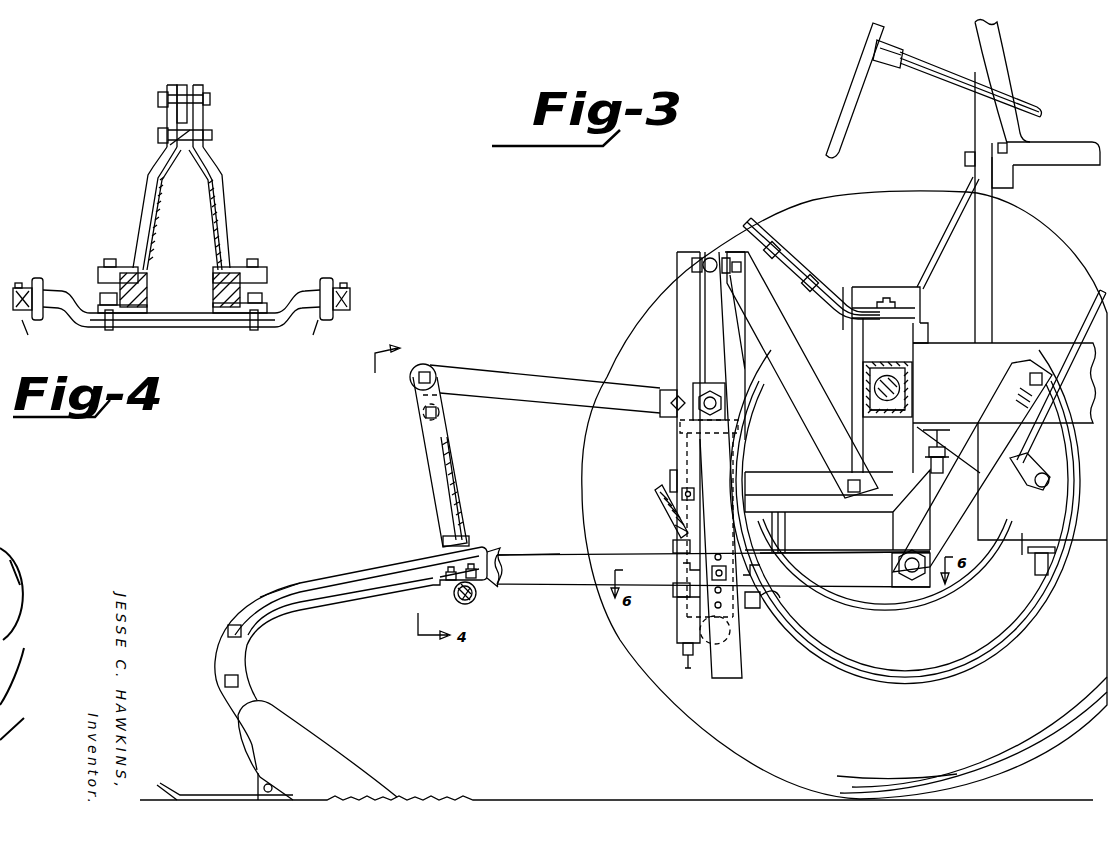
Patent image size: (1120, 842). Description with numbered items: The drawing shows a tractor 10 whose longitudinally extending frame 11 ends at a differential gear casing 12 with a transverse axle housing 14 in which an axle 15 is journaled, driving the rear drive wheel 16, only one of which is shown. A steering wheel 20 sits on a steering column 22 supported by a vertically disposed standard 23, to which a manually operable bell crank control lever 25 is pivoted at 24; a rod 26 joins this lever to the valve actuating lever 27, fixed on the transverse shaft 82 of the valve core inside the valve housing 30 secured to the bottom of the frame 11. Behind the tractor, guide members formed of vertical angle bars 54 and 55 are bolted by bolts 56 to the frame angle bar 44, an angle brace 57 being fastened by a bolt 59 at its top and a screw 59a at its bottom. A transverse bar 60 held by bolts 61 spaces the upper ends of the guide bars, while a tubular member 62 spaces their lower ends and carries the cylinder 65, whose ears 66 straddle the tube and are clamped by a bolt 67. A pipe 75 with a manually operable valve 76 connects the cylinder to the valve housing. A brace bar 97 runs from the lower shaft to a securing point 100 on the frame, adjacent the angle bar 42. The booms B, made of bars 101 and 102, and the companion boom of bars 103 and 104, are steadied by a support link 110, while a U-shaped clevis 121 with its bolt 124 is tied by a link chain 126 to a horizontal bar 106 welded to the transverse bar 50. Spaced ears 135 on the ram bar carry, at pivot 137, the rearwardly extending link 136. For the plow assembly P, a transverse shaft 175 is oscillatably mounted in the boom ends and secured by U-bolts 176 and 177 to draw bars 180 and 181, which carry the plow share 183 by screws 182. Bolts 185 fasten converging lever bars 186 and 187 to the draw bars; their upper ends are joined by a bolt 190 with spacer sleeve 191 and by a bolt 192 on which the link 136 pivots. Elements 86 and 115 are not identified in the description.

In FIG. 3, the tractor 10 is at (1047, 343).
In FIG. 3, the longitudinally extending frame 11 is at (955, 352).
In FIG. 3, the differential gear casing 12 is at (722, 553).
In FIG. 3, the transverse axle housing 14 is at (913, 404).
In FIG. 3, the axle 15 is at (910, 386).
In FIG. 3, the rear drive wheel 16 is at (1027, 760).
In FIG. 3, the steering wheel 20 is at (870, 68).
In FIG. 3, the steering column 22 is at (1025, 108).
In FIG. 3, the vertically disposed standard 23 is at (992, 256).
In FIG. 3, the pivot 24 is at (1010, 148).
In FIG. 3, the bell crank control lever 25 is at (1000, 42).
In FIG. 3, the rod 26 is at (1042, 432).
In FIG. 3, the valve actuating lever 27 is at (1050, 480).
In FIG. 3, the valve housing 30 is at (1022, 545).
In FIG. 3, the angle bar 42 is at (893, 527).
In FIG. 3, the angle bar 44 is at (862, 580).
In FIG. 3, the transverse bar 50 is at (668, 478).
In FIG. 3, the vertically disposed angle bar 54 is at (677, 323).
In FIG. 3, the vertically disposed angle bar 55 is at (743, 340).
In FIG. 3, the bolt 56 is at (694, 492).
In FIG. 3, the angle brace 57 is at (790, 325).
In FIG. 3, the bolt 59 is at (745, 268).
In FIG. 3, the screw 59a is at (860, 480).
In FIG. 3, the transverse bar 60 is at (712, 258).
In FIG. 3, the bolt 61 is at (692, 265).
In FIG. 3, the tubular member 62 is at (735, 630).
In FIG. 3, the cylinder 65 is at (752, 497).
In FIG. 3, the ear 66 is at (686, 667).
In FIG. 3, the bolt 67 is at (683, 655).
In FIG. 3, the pipe 75 is at (786, 527).
In FIG. 3, the manually operable valve 76 is at (950, 425).
In FIG. 3, the transverse shaft 82 is at (1046, 475).
In FIG. 3, the bolt 86 is at (1035, 580).
In FIG. 3, the brace bar 97 is at (1000, 397).
In FIG. 3, the securing point 100 is at (1030, 375).
In FIG. 3, the bar 101 is at (540, 587).
In FIG. 4, the bar 101 is at (342, 285).
In FIG. 4, the bar 102 is at (322, 278).
In FIG. 3, the bar 103 is at (498, 553).
In FIG. 4, the bar 103 is at (45, 287).
In FIG. 4, the bar 104 is at (35, 278).
In FIG. 3, the horizontally disposed bar 106 is at (657, 492).
In FIG. 3, the support bar or link 110 is at (725, 678).
In FIG. 3, the nut 115 is at (725, 402).
In FIG. 3, the U-shaped clevis 121 is at (683, 568).
In FIG. 3, the bolt 124 is at (672, 592).
In FIG. 3, the link chain 126 is at (662, 520).
In FIG. 3, the spaced ears 135 is at (662, 390).
In FIG. 3, the rearwardly extending link 136 is at (505, 373).
In FIG. 4, the rearwardly extending link 136 is at (180, 84).
In FIG. 3, the pivot 137 is at (671, 403).
In FIG. 3, the transverse shaft 175 is at (455, 597).
In FIG. 4, the transverse shaft 175 is at (185, 329).
In FIG. 3, the U-bolt 176 is at (476, 598).
In FIG. 4, the U-bolt 176 is at (254, 330).
In FIG. 4, the U-bolt 177 is at (110, 330).
In FIG. 3, the draw bar 180 is at (390, 562).
In FIG. 4, the draw bar 180 is at (213, 295).
In FIG. 4, the draw bar 181 is at (147, 295).
In FIG. 3, the screw 182 is at (238, 680).
In FIG. 3, the plow share 183 is at (305, 752).
In FIG. 3, the bolt 185 is at (466, 540).
In FIG. 4, the bolt 185 is at (258, 258).
In FIG. 3, the converging lever bar 186 is at (462, 467).
In FIG. 4, the converging lever bar 186 is at (223, 185).
In FIG. 4, the converging lever bar 187 is at (148, 185).
In FIG. 3, the bolt 190 is at (437, 412).
In FIG. 4, the bolt 190 is at (212, 136).
In FIG. 3, the spacer sleeve 191 is at (426, 418).
In FIG. 4, the spacer sleeve 191 is at (168, 148).
In FIG. 3, the bolt 192 is at (430, 372).
In FIG. 4, the bolt 192 is at (211, 97).
In FIG. 3, the plow assembly P is at (305, 575).
In FIG. 3, the boom B is at (557, 546).
In FIG. 4, the boom B is at (169, 334).